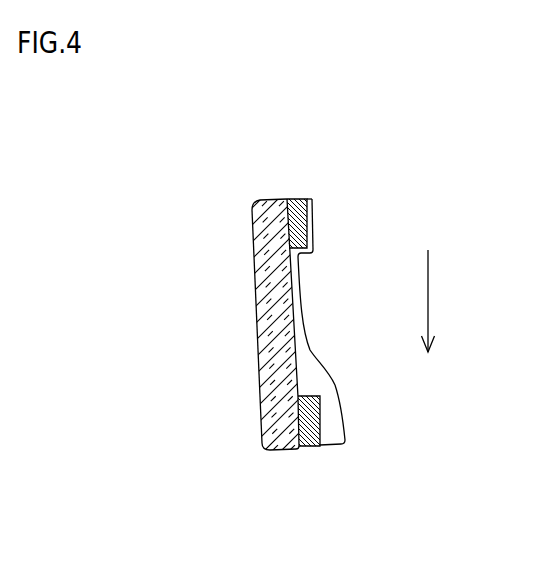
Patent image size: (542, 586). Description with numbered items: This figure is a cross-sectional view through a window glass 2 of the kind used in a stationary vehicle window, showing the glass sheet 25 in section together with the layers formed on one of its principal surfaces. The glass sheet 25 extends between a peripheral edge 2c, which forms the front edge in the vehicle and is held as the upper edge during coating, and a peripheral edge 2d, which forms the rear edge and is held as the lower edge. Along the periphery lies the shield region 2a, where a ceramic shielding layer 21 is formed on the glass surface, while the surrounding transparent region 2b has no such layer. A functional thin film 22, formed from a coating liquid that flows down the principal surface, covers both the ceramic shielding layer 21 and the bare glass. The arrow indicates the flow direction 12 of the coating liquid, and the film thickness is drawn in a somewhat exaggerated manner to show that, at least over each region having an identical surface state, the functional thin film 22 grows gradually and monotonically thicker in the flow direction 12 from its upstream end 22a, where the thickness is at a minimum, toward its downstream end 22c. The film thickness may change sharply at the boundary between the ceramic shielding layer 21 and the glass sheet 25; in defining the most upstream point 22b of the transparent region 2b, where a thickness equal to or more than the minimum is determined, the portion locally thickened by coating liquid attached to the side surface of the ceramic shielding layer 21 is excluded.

The window glass 2 is at (218, 213).
The shield region 2a is at (327, 225).
The transparent region 2b is at (315, 322).
The peripheral edge 2c is at (270, 199).
The peripheral edge 2d is at (282, 450).
The flow direction 12 is at (428, 290).
The ceramic shielding layer 21 is at (297, 199).
The functional thin film 22 is at (317, 382).
The upstream end 22a is at (308, 199).
The most upstream point of the transparent region 22b is at (299, 256).
The downstream end 22c is at (332, 445).
The glass sheet 25 is at (265, 325).